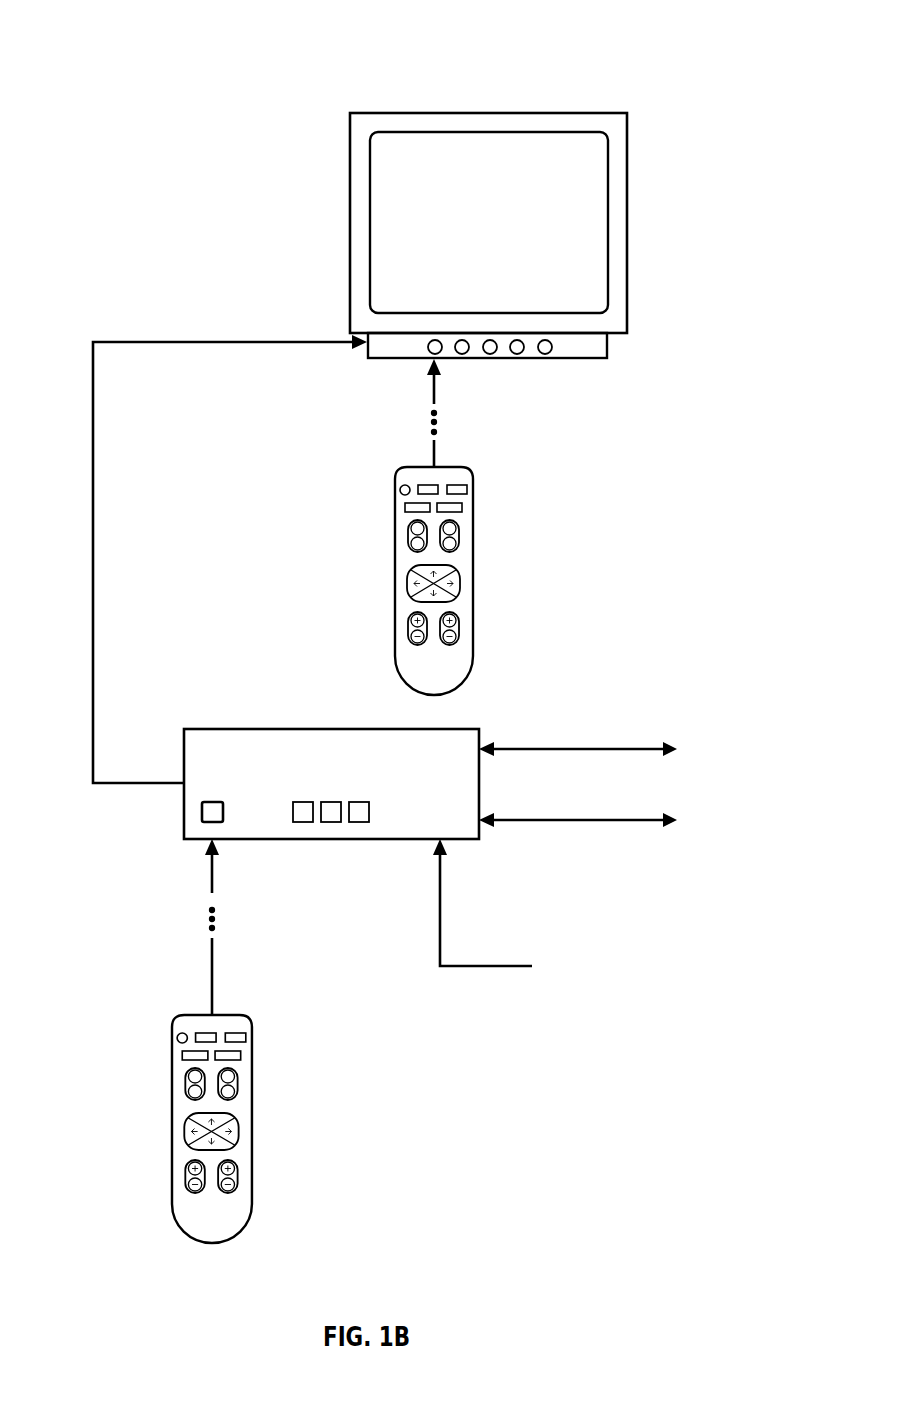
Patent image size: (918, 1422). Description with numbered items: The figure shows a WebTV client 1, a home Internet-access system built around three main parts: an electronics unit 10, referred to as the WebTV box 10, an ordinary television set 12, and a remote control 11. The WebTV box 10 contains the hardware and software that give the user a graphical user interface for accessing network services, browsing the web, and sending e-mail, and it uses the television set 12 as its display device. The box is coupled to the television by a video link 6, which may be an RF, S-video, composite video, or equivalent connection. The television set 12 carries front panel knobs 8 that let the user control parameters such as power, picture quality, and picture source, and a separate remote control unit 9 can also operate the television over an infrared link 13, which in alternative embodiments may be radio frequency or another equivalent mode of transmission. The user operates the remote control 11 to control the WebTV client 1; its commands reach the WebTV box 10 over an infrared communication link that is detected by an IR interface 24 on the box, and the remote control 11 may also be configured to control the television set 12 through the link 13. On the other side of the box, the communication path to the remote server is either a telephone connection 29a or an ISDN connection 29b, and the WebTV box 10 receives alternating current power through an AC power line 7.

The WebTV client 1 is at (609, 62).
The television set 12 is at (597, 301).
The front panel knobs 8 is at (558, 347).
The link 13 is at (434, 398).
The remote control unit 9 is at (440, 690).
The video link 6 is at (93, 651).
The electronics unit 10 is at (466, 832).
The IR interface 24 is at (223, 811).
The telephone connection 29a is at (526, 748).
The ISDN connection 29b is at (526, 819).
The AC power line 7 is at (502, 968).
The remote control 11 is at (222, 1236).